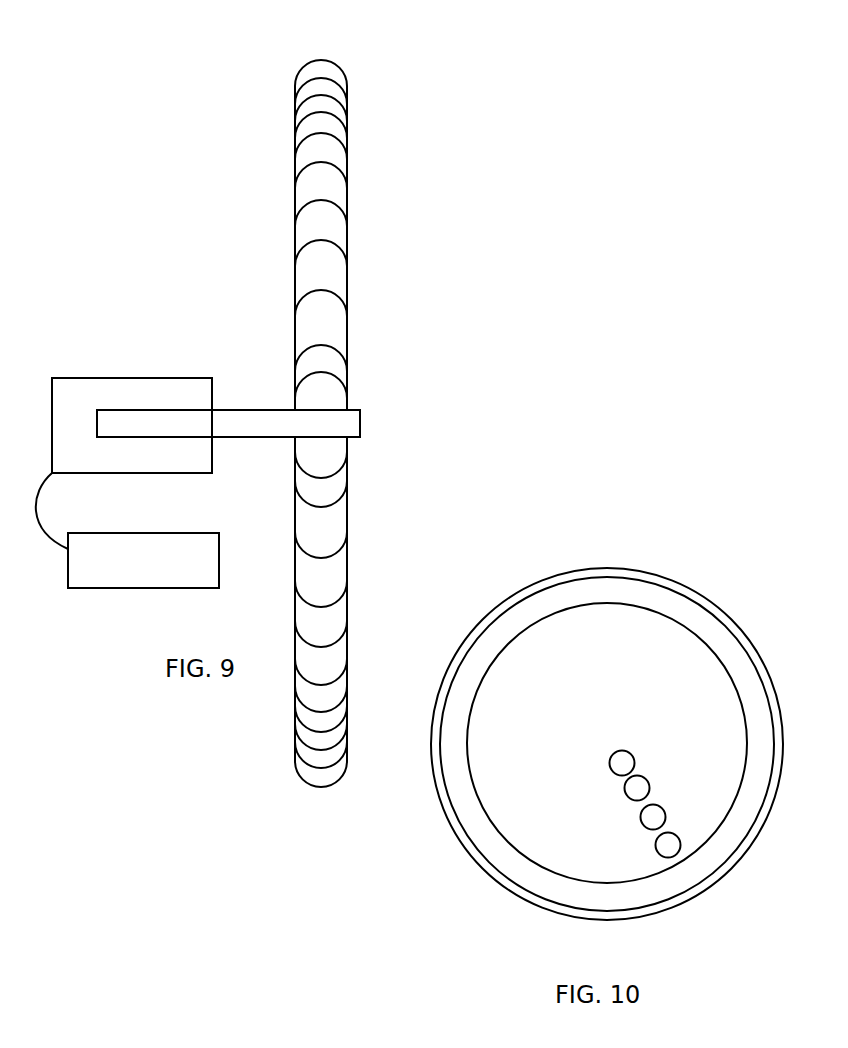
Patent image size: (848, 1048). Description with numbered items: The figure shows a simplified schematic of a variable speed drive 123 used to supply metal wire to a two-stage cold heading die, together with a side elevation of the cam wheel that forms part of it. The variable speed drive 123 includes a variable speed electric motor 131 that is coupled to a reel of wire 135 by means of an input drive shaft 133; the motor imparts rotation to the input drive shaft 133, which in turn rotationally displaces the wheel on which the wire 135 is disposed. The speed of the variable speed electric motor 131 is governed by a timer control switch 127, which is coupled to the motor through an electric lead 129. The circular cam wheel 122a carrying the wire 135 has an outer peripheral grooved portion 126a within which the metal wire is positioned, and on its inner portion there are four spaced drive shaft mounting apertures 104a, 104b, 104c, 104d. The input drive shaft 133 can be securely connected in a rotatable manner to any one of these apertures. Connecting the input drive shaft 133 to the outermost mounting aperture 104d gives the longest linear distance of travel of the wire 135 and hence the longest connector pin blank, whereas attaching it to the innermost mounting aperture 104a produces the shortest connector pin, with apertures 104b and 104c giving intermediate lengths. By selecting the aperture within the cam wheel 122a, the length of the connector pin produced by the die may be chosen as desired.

In FIG. 9, the variable speed drive 123 is at (212, 257).
In FIG. 9, the reel of wire 135 is at (337, 221).
In FIG. 9, the input drive shaft 133 is at (248, 410).
In FIG. 9, the variable speed electric motor 131 is at (62, 408).
In FIG. 9, the electric lead 129 is at (38, 502).
In FIG. 9, the timer control switch 127 is at (79, 578).
In FIG. 10, the cam wheel 122a is at (632, 570).
In FIG. 10, the outer peripheral grooved portion 126a is at (533, 610).
In FIG. 10, the innermost drive shaft mounting aperture 104a is at (610, 770).
In FIG. 10, the drive shaft mounting aperture 104b is at (625, 795).
In FIG. 10, the drive shaft mounting aperture 104c is at (643, 826).
In FIG. 10, the outermost drive shaft mounting aperture 104d is at (658, 852).